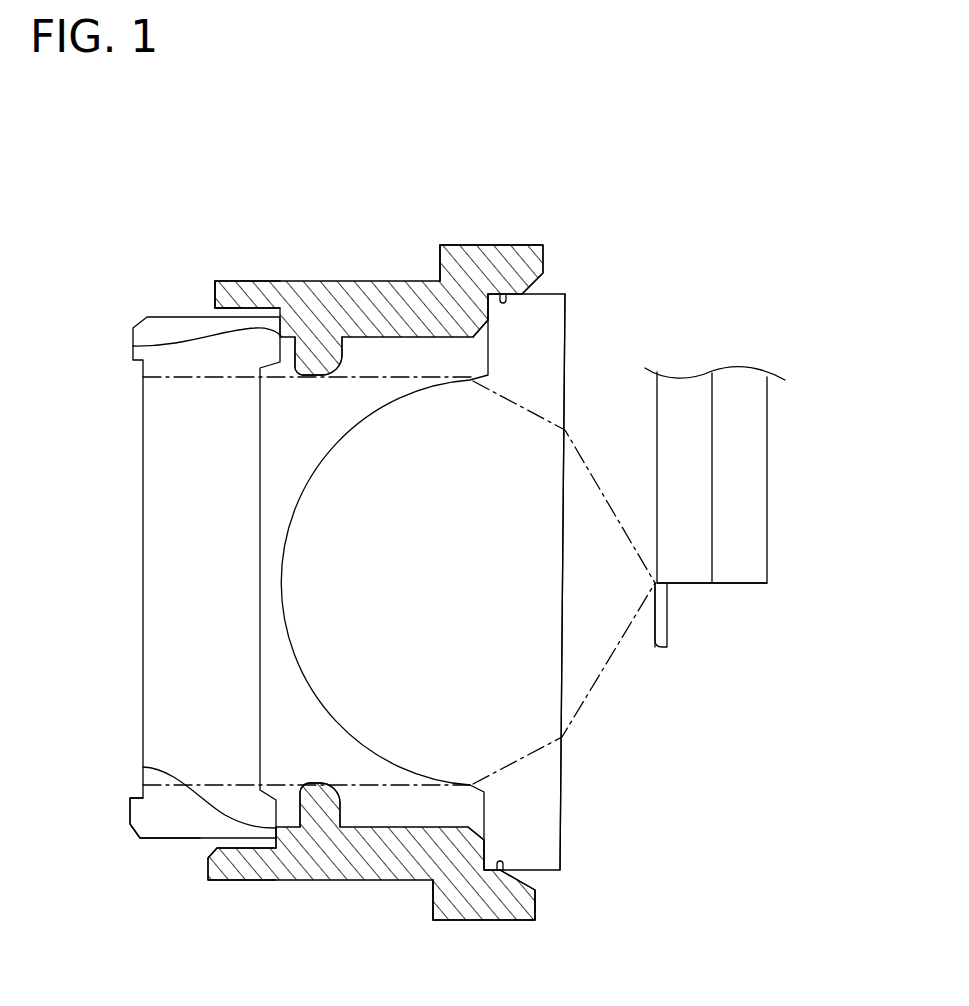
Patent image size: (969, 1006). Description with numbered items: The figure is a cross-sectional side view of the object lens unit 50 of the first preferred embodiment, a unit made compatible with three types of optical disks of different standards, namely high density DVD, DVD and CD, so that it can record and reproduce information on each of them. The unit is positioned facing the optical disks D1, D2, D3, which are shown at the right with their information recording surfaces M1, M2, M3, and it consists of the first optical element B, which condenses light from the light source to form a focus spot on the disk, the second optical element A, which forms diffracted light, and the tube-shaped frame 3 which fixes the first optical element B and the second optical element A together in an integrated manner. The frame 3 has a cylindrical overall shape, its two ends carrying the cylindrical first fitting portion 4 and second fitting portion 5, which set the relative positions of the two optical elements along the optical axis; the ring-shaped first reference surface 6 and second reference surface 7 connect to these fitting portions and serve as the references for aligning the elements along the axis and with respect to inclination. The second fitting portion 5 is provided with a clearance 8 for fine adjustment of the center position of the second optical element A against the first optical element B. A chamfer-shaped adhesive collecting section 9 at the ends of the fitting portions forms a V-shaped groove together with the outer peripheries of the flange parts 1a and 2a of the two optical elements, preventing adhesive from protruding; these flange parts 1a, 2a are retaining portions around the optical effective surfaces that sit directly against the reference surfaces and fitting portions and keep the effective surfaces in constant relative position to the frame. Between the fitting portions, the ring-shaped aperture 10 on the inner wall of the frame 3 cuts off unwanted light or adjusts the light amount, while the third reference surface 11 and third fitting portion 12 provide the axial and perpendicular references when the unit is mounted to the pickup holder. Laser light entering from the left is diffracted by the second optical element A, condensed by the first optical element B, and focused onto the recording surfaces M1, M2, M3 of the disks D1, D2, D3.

The object lens unit 50 is at (777, 202).
The second optical element A is at (143, 422).
The first optical element B is at (566, 328).
The flange part 1a is at (542, 774).
The flange part 2a is at (163, 818).
The frame 3 is at (473, 245).
The first fitting portion 4 is at (503, 294).
The second fitting portion 5 is at (238, 308).
The first reference surface 6 is at (490, 318).
The second reference surface 7 is at (133, 346).
The clearance 8 is at (283, 860).
The adhesive collecting section 9 is at (215, 306).
The aperture 10 is at (297, 366).
The third reference surface 11 is at (440, 258).
The third fitting portion 12 is at (373, 281).
The information recording surface M1 is at (662, 640).
The information recording surface M2 is at (705, 457).
The information recording surface M3 is at (765, 410).
The optical disk D1 is at (657, 648).
The optical disk D2 is at (683, 572).
The optical disk D3 is at (772, 590).